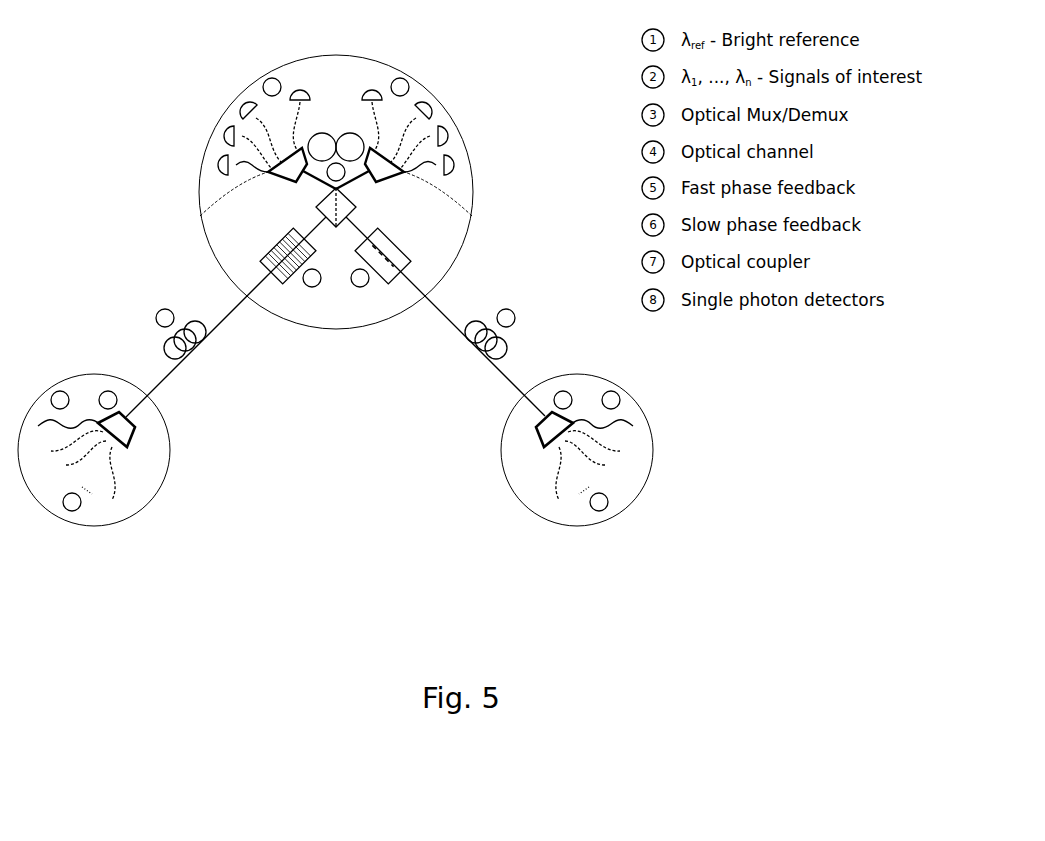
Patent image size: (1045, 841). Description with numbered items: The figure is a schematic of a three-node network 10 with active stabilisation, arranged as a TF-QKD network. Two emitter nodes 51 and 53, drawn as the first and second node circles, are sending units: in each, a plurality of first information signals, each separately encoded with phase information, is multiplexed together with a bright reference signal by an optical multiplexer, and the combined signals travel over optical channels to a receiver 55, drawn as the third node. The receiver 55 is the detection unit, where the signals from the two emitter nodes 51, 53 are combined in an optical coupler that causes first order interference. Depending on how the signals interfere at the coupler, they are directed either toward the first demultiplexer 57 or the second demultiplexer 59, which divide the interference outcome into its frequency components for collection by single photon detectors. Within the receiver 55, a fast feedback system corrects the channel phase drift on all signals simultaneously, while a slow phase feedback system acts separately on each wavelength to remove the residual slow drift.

The three-node network 10 is at (333, 487).
The emitter node 51 is at (100, 533).
The emitter node 53 is at (644, 507).
The receiver 55 is at (478, 171).
The first demultiplexer 57 is at (266, 174).
The second demultiplexer 59 is at (390, 184).